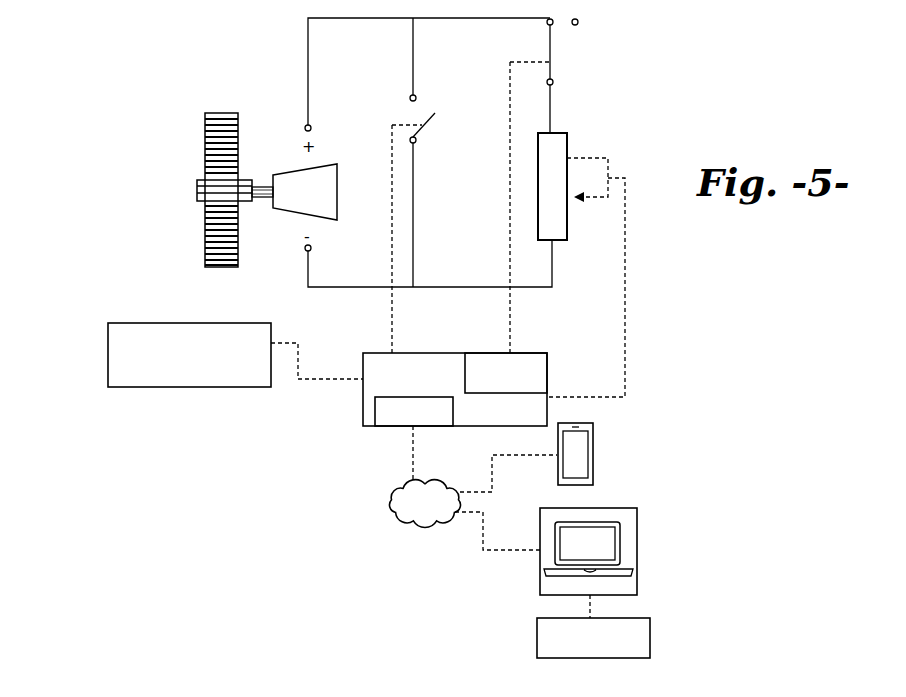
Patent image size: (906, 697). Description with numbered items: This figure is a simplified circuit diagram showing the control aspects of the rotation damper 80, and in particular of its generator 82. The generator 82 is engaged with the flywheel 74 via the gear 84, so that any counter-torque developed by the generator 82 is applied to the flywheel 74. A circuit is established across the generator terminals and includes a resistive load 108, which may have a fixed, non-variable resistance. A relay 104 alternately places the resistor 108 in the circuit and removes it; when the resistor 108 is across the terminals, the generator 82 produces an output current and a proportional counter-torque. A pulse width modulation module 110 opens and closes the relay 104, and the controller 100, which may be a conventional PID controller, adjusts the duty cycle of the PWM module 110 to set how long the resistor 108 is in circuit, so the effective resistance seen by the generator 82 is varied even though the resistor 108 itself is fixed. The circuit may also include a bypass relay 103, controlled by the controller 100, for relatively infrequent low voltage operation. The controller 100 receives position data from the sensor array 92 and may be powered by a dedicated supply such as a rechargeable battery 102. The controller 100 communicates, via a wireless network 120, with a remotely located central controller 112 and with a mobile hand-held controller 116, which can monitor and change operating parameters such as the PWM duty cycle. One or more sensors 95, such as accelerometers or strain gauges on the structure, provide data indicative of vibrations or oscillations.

The rotation damper 80 is at (692, 84).
The flywheel 74 is at (205, 150).
The gear 84 is at (197, 188).
The generator 82 is at (300, 200).
The bypass relay 103 is at (422, 128).
The relay 104 is at (550, 48).
The resistive load 108 is at (567, 228).
The sensor array 92 is at (108, 358).
The controller 100 is at (405, 353).
The pulse width modulation module 110 is at (547, 360).
The rechargeable battery 102 is at (395, 426).
The wireless network 120 is at (422, 524).
The mobile hand-held controller 116 is at (593, 455).
The central controller 112 is at (637, 540).
The sensors 95 is at (537, 642).